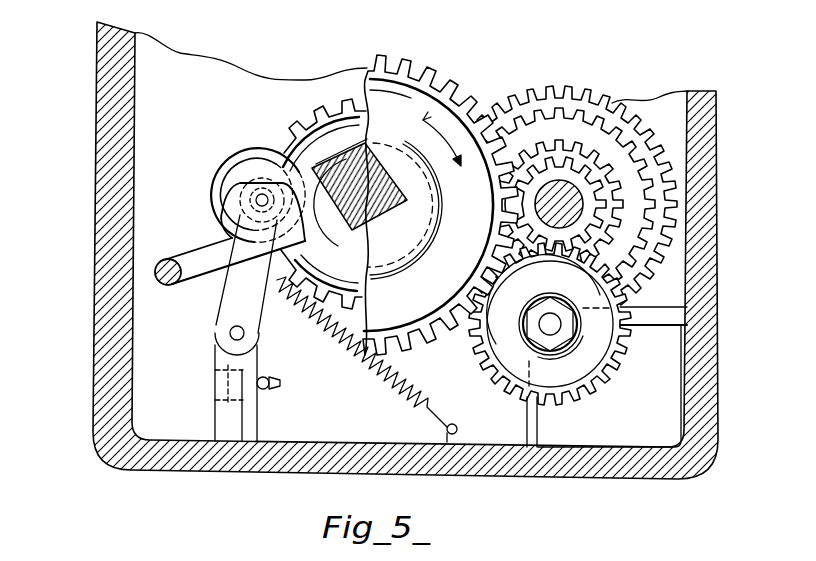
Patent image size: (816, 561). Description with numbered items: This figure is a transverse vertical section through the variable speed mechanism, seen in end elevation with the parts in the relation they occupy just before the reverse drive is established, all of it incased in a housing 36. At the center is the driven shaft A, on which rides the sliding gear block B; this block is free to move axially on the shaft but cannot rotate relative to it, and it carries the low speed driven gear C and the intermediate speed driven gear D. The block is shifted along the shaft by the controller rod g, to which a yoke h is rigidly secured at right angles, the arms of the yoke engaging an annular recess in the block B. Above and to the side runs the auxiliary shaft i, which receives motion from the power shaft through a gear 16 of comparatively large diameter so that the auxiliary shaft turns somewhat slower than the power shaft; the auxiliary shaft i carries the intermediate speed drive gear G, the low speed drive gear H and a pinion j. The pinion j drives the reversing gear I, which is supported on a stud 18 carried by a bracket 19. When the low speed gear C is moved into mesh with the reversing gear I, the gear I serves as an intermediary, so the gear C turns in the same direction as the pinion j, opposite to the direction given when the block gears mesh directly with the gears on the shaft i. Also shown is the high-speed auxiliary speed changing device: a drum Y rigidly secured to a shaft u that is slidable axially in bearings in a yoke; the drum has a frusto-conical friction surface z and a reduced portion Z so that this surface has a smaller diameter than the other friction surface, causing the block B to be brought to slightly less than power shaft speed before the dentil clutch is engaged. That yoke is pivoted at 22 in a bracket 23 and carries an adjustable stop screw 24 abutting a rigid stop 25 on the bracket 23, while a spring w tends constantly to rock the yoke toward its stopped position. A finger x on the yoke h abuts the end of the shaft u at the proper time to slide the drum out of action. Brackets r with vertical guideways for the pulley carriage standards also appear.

The housing 36 is at (95, 268).
The gear 16 is at (557, 105).
The intermediate speed drive gear G is at (578, 135).
The low speed drive gear H is at (580, 187).
The auxiliary shaft i is at (586, 203).
The pinion j is at (578, 162).
The reversing gear I is at (597, 353).
The stud 18 is at (551, 326).
The bracket 19 is at (538, 407).
The driven shaft A is at (380, 175).
The low speed driven gear C is at (385, 73).
The sliding gear block B is at (347, 160).
The intermediate speed driven gear D is at (297, 127).
The drum Y is at (233, 157).
The reduced portion Z is at (233, 173).
The finger x is at (240, 187).
The shaft u is at (257, 199).
The friction surface z is at (232, 217).
The yoke h is at (313, 160).
The controller rod g is at (168, 286).
The brackets r is at (255, 300).
The pivot 22 is at (233, 335).
The bracket 23 is at (248, 418).
The rigid stop 25 is at (225, 388).
The adjustable stop screw 24 is at (280, 383).
The spring w is at (410, 393).